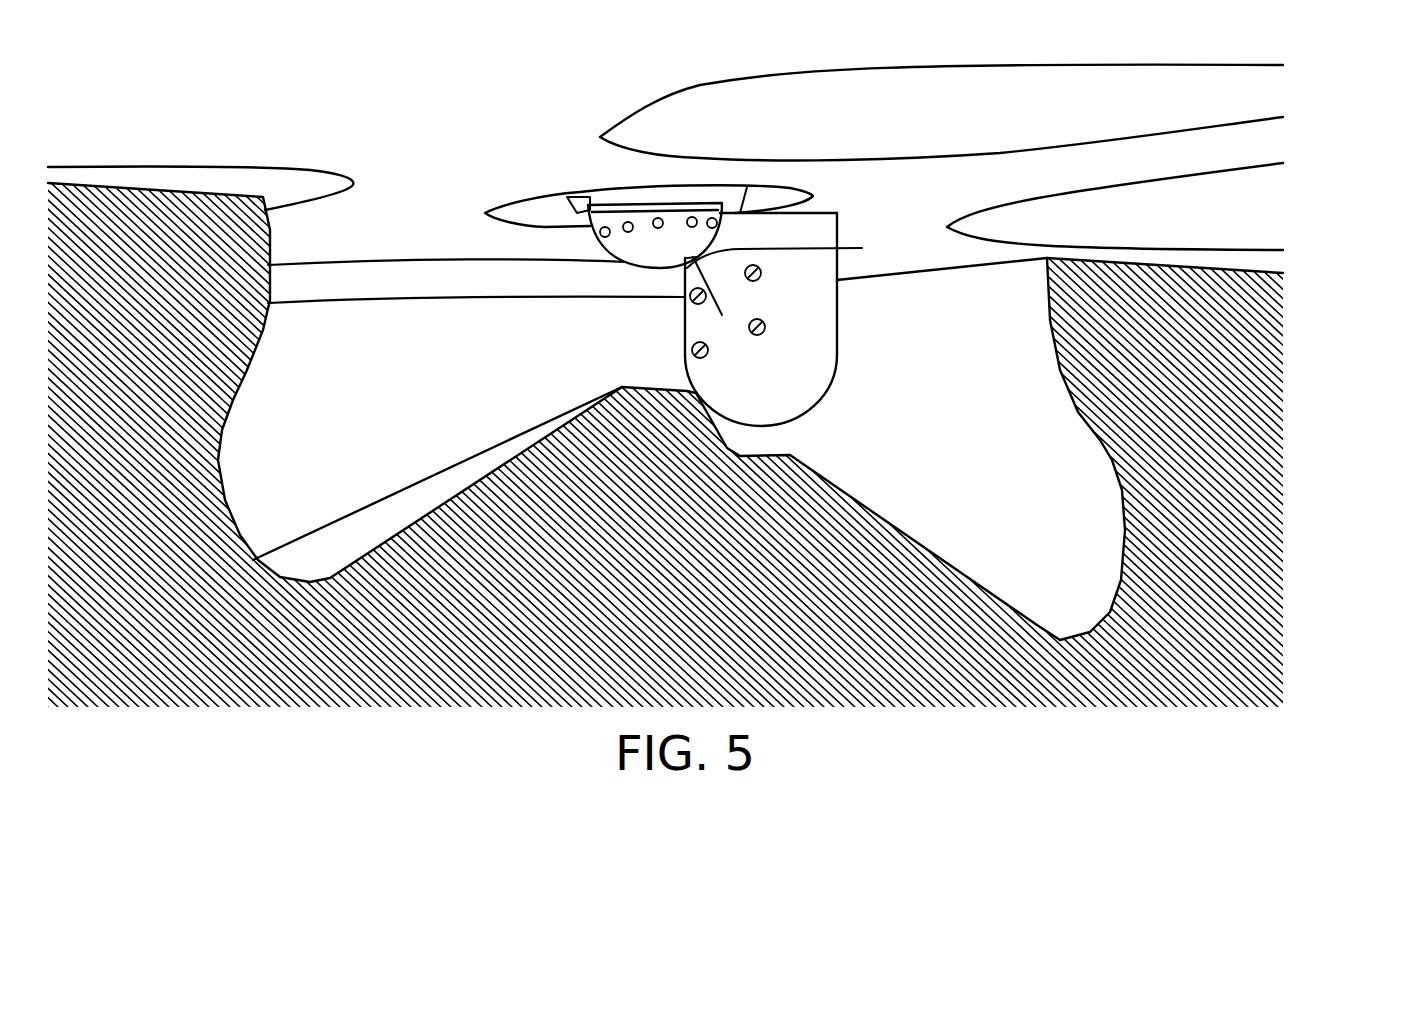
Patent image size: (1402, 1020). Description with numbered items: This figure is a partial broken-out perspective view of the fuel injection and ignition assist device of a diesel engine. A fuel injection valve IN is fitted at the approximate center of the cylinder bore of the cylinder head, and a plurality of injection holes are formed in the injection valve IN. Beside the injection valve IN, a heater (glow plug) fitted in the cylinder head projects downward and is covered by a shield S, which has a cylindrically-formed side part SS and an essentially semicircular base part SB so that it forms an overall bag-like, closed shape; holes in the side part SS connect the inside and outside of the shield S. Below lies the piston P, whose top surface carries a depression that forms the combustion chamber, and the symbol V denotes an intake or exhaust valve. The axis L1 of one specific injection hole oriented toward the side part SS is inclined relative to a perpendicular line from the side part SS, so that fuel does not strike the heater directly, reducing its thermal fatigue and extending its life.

The intake valve or exhaust valve V is at (254, 183).
The fuel injection valve IN is at (592, 203).
The axis L1 is at (862, 248).
The shield S is at (851, 391).
The side part SS is at (823, 315).
The base part SB is at (780, 405).
The piston P is at (1262, 475).